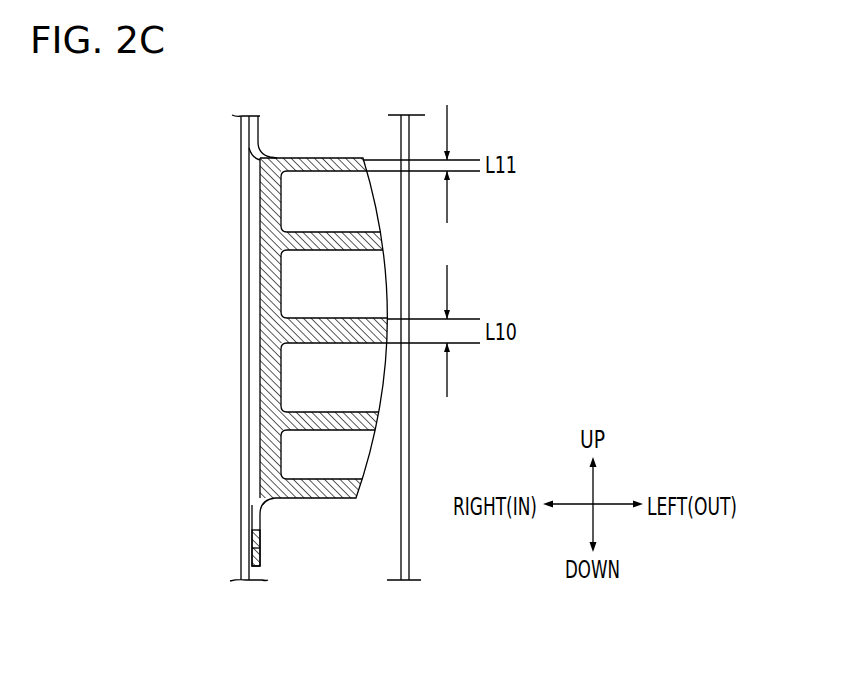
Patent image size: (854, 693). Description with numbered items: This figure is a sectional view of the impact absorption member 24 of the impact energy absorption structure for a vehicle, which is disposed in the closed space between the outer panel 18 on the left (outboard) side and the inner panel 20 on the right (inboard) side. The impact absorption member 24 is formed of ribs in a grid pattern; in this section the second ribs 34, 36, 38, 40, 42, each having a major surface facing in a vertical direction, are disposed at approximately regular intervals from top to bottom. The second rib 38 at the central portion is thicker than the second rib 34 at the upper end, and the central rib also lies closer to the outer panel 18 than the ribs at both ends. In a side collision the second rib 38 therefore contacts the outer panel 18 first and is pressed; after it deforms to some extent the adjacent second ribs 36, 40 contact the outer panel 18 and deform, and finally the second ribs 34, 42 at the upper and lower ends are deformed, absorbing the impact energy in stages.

The outer panel 18 is at (404, 115).
The inner panel 20 is at (243, 116).
The impact absorption member 24 is at (305, 136).
The second rib 34 is at (318, 172).
The second rib 36 is at (320, 250).
The second rib 38 is at (320, 343).
The second rib 40 is at (320, 431).
The second rib 42 is at (300, 474).